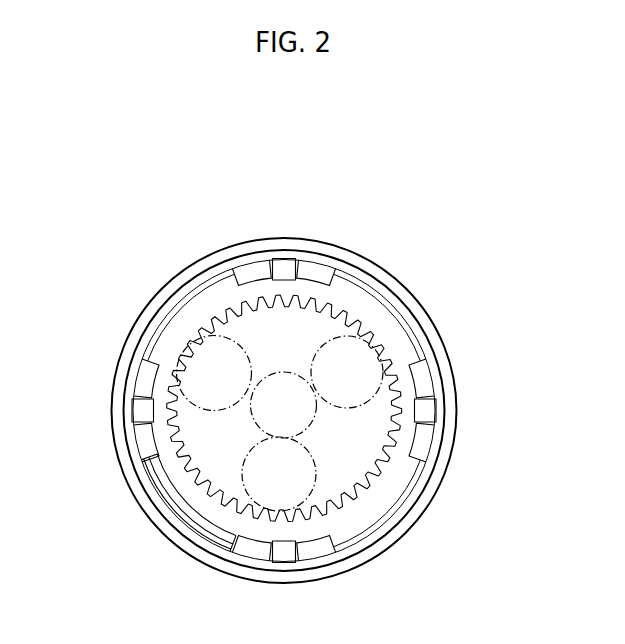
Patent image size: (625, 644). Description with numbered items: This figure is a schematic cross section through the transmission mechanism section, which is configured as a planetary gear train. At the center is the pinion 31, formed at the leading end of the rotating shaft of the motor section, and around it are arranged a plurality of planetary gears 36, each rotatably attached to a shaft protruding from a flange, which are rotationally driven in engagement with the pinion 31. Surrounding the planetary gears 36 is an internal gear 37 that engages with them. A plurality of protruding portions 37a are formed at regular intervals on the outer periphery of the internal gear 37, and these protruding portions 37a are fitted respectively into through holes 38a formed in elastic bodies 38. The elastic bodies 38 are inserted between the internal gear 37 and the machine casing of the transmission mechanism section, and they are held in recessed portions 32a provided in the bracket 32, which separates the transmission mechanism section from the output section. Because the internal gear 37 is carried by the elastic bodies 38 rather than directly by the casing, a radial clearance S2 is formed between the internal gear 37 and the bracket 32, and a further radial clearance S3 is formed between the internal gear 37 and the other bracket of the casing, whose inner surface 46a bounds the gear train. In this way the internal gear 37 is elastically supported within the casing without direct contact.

The pinion 31 is at (317, 416).
The bracket 32 is at (402, 335).
The recessed portion 32a is at (351, 322).
The planetary gear 36 is at (205, 368).
The internal gear 37 is at (220, 305).
The protruding portion 37a is at (427, 412).
The elastic body 38 is at (312, 268).
The through hole 38a is at (297, 262).
The inner peripheral surface 46a is at (435, 477).
The radial clearance S2 is at (178, 532).
The radial clearance S3 is at (127, 414).